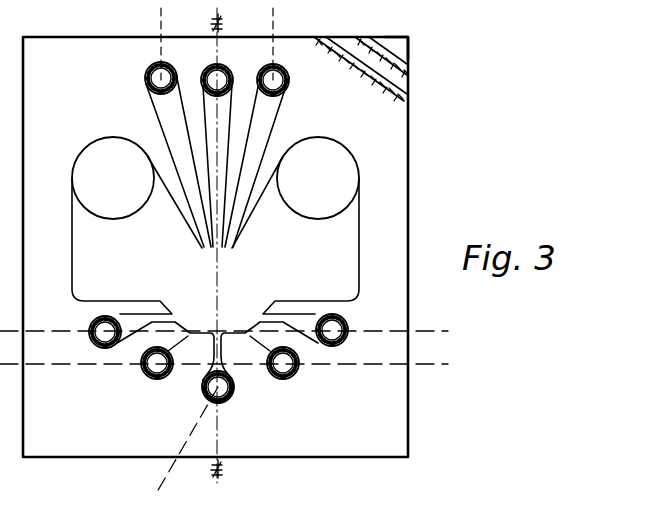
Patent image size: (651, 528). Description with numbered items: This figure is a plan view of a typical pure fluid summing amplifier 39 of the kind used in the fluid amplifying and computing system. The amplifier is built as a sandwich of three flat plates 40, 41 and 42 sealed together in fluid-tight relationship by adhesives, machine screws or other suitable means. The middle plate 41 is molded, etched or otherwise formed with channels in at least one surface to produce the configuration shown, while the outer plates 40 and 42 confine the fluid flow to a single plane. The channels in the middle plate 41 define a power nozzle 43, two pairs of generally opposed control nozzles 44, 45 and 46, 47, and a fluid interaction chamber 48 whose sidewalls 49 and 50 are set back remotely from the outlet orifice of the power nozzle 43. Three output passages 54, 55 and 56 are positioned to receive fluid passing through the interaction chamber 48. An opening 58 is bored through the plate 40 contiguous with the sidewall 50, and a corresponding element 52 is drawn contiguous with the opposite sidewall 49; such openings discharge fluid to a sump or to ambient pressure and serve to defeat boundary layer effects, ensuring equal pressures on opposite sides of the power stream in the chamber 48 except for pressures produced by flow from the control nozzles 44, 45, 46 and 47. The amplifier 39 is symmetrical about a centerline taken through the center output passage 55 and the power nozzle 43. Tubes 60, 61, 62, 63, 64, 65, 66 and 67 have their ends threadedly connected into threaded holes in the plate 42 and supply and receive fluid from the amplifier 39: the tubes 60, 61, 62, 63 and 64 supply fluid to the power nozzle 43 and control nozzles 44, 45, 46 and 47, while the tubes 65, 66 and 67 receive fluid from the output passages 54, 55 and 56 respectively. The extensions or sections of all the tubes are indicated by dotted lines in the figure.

The pure fluid summing amplifier 39 is at (410, 398).
The flat plate 40 is at (401, 47).
The middle plate 41 is at (403, 76).
The flat plate 42 is at (404, 103).
The power nozzle 43 is at (238, 356).
The control nozzle 44 is at (262, 352).
The control nozzle 45 is at (176, 338).
The control nozzle 46 is at (300, 322).
The control nozzle 47 is at (133, 318).
The fluid interaction chamber 48 is at (230, 302).
The sidewall 49 is at (358, 246).
The sidewall 50 is at (72, 259).
The right supply roll 52 is at (354, 151).
The output passage 54 is at (260, 130).
The center output passage 55 is at (218, 126).
The output passage 56 is at (170, 127).
The opening 58 is at (92, 157).
The tube 60 is at (232, 395).
The tube 61 is at (280, 380).
The tube 62 is at (156, 379).
The tube 63 is at (339, 344).
The tube 64 is at (95, 343).
The tube 65 is at (289, 87).
The tube 66 is at (225, 70).
The tube 67 is at (145, 76).